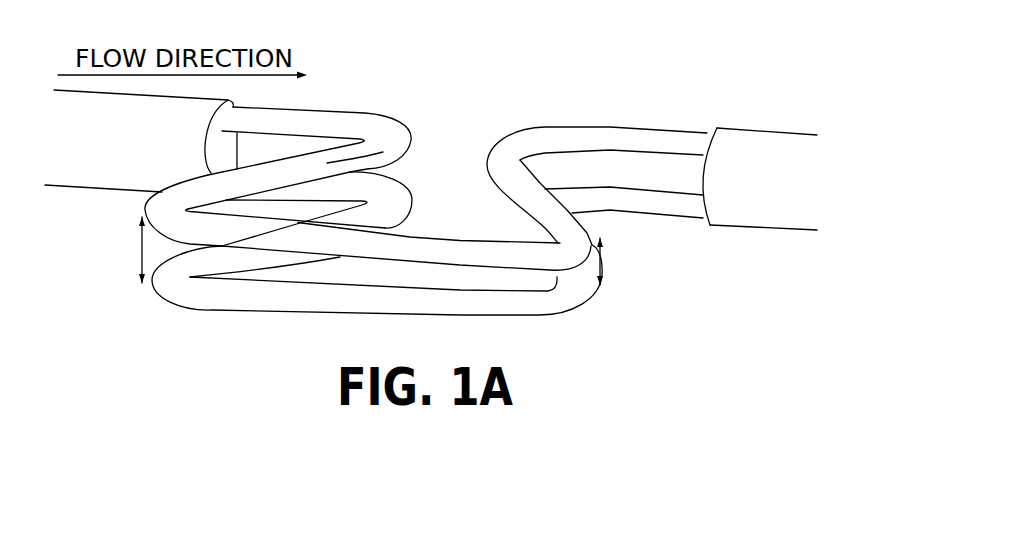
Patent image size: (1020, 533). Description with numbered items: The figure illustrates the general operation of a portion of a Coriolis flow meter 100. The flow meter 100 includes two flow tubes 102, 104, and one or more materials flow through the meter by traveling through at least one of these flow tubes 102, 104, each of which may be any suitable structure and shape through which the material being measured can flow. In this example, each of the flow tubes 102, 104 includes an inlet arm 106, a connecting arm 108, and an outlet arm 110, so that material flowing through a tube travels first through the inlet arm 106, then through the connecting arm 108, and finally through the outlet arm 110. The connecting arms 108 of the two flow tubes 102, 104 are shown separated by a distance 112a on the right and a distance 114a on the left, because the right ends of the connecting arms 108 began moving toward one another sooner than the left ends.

The Coriolis flow meter 100 is at (616, 63).
The flow tube 102 is at (533, 127).
The flow tube 104 is at (688, 218).
The inlet arm 106 is at (378, 121).
The connecting arm 108 is at (428, 251).
The outlet arm 110 is at (520, 187).
The distance 112a is at (632, 261).
The distance 114a is at (110, 250).